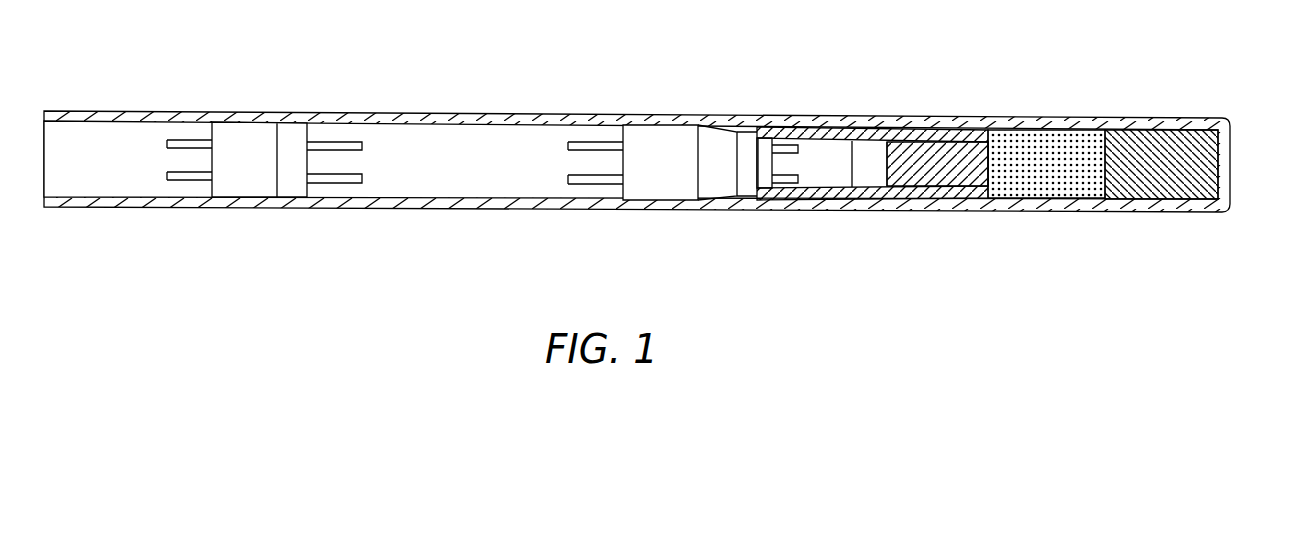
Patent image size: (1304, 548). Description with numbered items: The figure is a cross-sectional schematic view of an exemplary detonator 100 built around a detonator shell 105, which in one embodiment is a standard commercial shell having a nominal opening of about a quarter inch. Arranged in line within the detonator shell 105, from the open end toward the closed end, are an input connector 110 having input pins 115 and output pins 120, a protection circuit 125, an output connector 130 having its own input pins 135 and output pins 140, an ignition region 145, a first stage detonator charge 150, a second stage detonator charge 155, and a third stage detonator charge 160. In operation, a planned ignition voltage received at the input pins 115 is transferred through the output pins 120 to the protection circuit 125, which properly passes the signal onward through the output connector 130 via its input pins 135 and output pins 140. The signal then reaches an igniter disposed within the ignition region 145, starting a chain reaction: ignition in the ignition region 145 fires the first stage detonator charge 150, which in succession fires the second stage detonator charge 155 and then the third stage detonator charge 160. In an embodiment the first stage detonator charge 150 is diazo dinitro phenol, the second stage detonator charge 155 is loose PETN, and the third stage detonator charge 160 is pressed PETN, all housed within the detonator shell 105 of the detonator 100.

The detonator 100 is at (664, 169).
The detonator shell 105 is at (1146, 118).
The input connector 110 is at (252, 151).
The input pins 115 is at (167, 174).
The output pins 120 is at (362, 146).
The protection circuit 125 is at (442, 163).
The output connector 130 is at (673, 150).
The input pins 135 is at (570, 170).
The output pins 140 is at (800, 149).
The ignition region 145 is at (843, 151).
The first stage detonator charge 150 is at (955, 160).
The second stage detonator charge 155 is at (1062, 160).
The third stage detonator charge 160 is at (1182, 167).